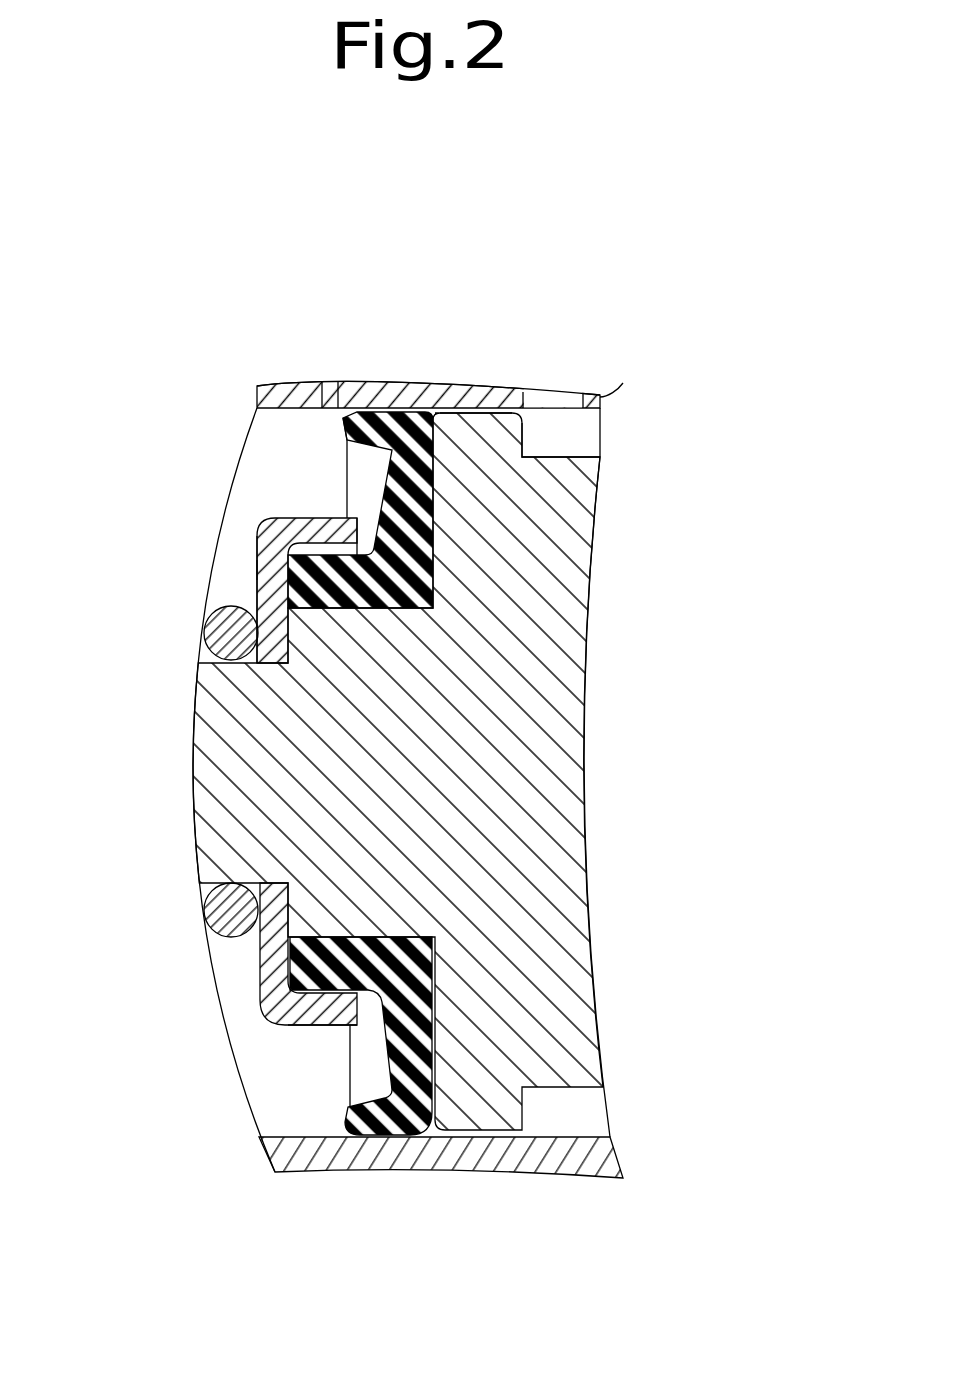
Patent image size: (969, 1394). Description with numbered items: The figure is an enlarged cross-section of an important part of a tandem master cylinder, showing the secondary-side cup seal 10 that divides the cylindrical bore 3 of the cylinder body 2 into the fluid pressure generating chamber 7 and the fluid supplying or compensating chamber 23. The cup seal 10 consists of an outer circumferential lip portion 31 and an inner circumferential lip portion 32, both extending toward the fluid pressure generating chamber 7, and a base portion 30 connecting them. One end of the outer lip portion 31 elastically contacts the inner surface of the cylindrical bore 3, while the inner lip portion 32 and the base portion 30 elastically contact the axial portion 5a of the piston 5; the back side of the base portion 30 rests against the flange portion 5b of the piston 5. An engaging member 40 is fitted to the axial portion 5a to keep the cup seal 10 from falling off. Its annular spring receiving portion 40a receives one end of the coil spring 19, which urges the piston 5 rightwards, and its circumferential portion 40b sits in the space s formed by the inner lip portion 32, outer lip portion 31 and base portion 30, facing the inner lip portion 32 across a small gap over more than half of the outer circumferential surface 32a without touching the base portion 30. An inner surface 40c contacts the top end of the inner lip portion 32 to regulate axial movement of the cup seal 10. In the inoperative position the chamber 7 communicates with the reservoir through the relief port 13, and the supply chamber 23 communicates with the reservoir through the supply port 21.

The cylinder body 2 is at (462, 1165).
The cylindrical bore 3 is at (308, 410).
The secondary piston 5 is at (520, 745).
The axial portion 5a is at (337, 792).
The flange portion 5b is at (477, 443).
The fluid pressure generating chamber 7 is at (303, 498).
The space s is at (340, 480).
The cup seal 10 is at (377, 1040).
The relief port 13 is at (327, 384).
The coil spring 19 is at (222, 635).
The supply port 21 is at (557, 437).
The fluid supplying chamber 23 is at (568, 400).
The base portion 30 is at (398, 412).
The outer circumferential lip portion 31 is at (367, 411).
The inner circumferential lip portion 32 is at (262, 599).
The outer circumferential surface 32a is at (265, 520).
The engaging member 40 is at (250, 985).
The spring receiving portion 40a is at (257, 938).
The circumferential portion 40b is at (320, 1018).
The inner surface 40c is at (262, 568).